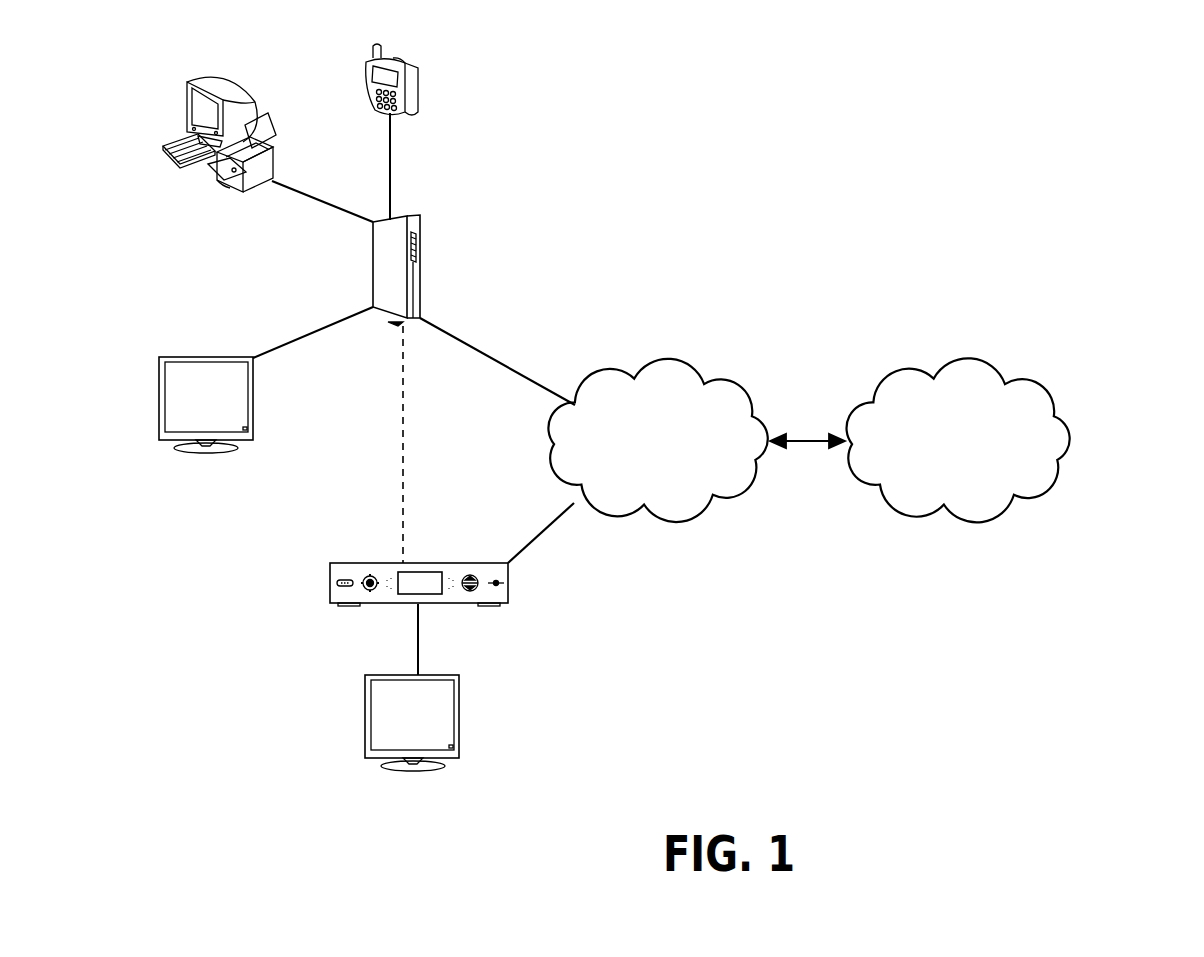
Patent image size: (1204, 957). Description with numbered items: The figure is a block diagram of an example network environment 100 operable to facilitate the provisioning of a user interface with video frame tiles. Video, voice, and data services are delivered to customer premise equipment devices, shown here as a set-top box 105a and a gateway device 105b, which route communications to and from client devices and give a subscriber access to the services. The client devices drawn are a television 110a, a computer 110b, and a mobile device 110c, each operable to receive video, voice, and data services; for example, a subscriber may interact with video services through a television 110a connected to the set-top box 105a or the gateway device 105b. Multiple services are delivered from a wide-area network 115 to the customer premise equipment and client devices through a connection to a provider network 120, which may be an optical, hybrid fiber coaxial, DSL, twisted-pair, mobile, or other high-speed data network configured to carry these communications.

The network environment 100 is at (1122, 796).
The set-top box 105a is at (350, 606).
The gateway device 105b is at (420, 216).
The television 110a is at (207, 454).
The computer 110b is at (243, 192).
The mobile device 110c is at (418, 62).
The wide-area network 115 is at (962, 518).
The provider network 120 is at (665, 518).